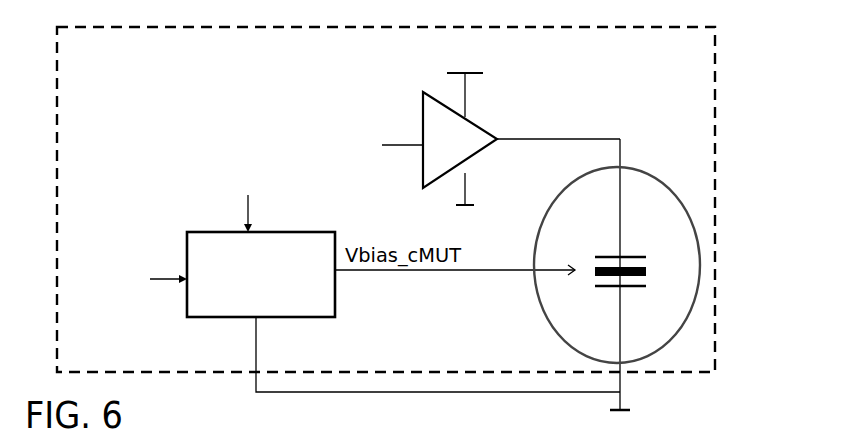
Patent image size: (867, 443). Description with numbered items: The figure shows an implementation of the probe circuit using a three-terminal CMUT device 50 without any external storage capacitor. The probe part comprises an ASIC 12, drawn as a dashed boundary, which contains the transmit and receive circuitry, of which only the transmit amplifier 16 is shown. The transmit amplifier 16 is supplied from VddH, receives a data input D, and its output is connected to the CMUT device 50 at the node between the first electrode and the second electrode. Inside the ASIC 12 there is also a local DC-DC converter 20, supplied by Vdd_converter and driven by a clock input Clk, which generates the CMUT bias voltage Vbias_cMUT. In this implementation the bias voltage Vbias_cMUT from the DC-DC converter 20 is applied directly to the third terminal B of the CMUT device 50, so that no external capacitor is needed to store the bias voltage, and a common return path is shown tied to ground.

The ASIC 12 is at (717, 138).
The transmit amplifier 16 is at (423, 97).
The DC-DC converter 20 is at (317, 232).
The three-terminal CMUT device 50 is at (690, 238).